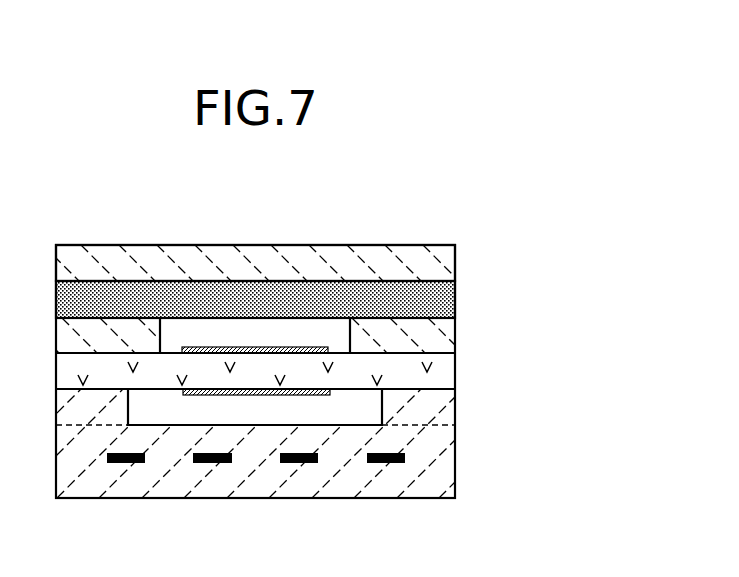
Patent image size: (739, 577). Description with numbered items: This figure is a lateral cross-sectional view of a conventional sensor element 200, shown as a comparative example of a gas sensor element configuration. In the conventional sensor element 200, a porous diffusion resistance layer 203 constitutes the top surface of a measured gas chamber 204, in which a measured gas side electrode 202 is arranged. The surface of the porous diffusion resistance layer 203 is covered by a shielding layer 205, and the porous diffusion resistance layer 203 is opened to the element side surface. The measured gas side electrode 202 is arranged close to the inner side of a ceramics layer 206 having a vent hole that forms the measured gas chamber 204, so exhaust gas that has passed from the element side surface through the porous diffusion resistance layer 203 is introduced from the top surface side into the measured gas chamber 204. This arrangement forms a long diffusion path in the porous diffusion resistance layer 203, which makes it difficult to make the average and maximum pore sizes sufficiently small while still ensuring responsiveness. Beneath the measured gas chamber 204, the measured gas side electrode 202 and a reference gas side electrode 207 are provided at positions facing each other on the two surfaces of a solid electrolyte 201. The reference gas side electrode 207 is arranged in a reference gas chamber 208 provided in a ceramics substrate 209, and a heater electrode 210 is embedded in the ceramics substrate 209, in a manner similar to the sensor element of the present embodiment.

The conventional sensor element 200 is at (433, 229).
The solid electrolyte 201 is at (430, 373).
The measured gas side electrode 202 is at (273, 347).
The porous diffusion resistance layer 203 is at (430, 298).
The measured gas chamber 204 is at (196, 338).
The shielding layer 205 is at (428, 264).
The ceramics layer 206 is at (430, 335).
The reference gas side electrode 207 is at (279, 396).
The reference gas chamber 208 is at (188, 410).
The ceramics substrate 209 is at (455, 437).
The heater electrode 210 is at (385, 463).